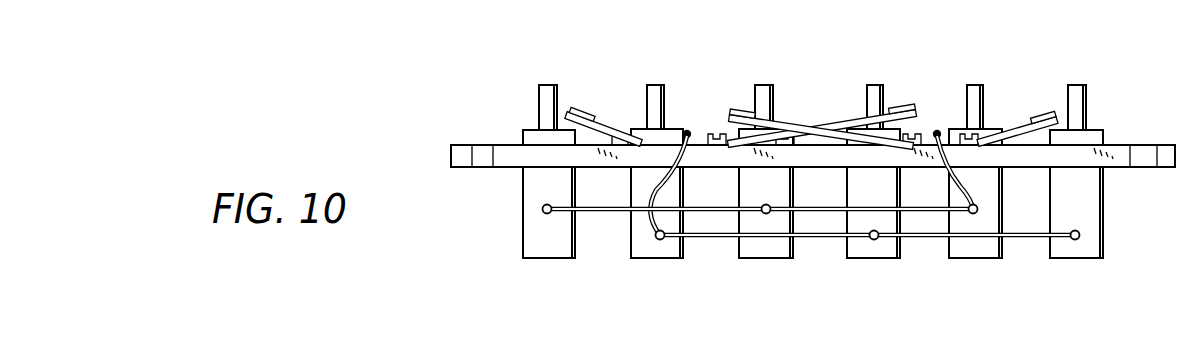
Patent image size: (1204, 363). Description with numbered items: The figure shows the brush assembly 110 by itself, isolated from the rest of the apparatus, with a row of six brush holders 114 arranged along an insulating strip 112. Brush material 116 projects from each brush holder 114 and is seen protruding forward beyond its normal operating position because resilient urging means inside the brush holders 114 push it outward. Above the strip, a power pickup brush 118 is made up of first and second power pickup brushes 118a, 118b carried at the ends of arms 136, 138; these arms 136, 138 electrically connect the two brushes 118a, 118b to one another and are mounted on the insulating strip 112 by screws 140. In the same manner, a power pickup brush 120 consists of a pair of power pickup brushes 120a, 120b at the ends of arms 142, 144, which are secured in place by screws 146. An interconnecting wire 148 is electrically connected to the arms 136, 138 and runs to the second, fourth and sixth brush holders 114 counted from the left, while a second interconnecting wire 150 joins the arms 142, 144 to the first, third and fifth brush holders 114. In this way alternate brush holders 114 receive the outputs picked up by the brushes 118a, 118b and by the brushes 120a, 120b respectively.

The brush assembly 110 is at (931, 74).
The insulating strip 112 is at (1178, 162).
The brush holder 114 is at (532, 222).
The brush material 116 is at (541, 103).
The power pickup brush 118 is at (597, 110).
The first power pickup brush 118a is at (578, 112).
The second power pickup brush 118b is at (896, 106).
The power pickup brush 120 is at (1025, 122).
The power pickup brush 120a is at (740, 108).
The power pickup brush 120b is at (1048, 118).
The arm 136 is at (620, 128).
The arm 138 is at (742, 126).
The screw 140 is at (683, 128).
The arm 142 is at (792, 128).
The arm 144 is at (1018, 128).
The screw 146 is at (941, 138).
The interconnecting wire 148 is at (653, 186).
The interconnecting wire 150 is at (970, 190).